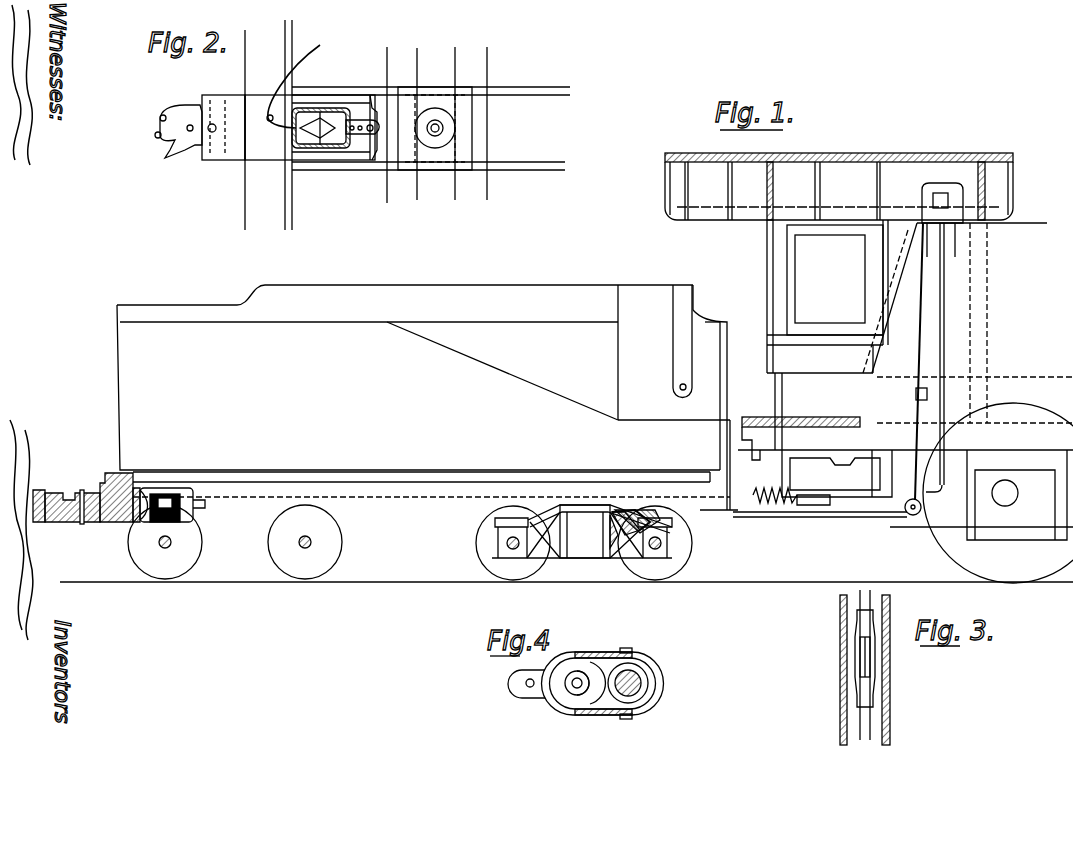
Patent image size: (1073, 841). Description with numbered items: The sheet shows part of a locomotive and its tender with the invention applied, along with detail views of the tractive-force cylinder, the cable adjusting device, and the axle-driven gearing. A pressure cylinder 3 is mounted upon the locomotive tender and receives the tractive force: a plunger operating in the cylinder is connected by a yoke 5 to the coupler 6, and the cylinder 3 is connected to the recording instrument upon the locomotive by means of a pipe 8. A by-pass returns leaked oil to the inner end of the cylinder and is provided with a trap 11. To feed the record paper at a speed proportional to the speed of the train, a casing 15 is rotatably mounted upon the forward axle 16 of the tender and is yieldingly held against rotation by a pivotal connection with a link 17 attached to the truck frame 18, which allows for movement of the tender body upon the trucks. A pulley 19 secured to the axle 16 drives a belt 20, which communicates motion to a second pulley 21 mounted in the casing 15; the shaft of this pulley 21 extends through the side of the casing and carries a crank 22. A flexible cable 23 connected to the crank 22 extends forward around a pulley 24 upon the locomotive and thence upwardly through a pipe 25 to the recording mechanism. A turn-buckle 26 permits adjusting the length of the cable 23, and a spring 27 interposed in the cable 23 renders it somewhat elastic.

In FIG. 2, the pressure cylinder 3 is at (335, 128).
In FIG. 1, the pressure cylinder 3 is at (145, 522).
In FIG. 2, the yoke 5 is at (376, 110).
In FIG. 1, the yoke 5 is at (203, 503).
In FIG. 2, the coupler 6 is at (186, 148).
In FIG. 1, the coupler 6 is at (36, 490).
In FIG. 2, the pipe 8 is at (301, 76).
In FIG. 1, the pipe 8 is at (428, 497).
In FIG. 2, the trap 11 is at (312, 150).
In FIG. 1, the casing 15 is at (615, 558).
In FIG. 4, the casing 15 is at (597, 656).
In FIG. 1, the forward axle 16 is at (665, 537).
In FIG. 4, the forward axle 16 is at (652, 683).
In FIG. 1, the link 17 is at (612, 522).
In FIG. 1, the truck frame 18 is at (612, 543).
In FIG. 4, the pulley 19 is at (628, 650).
In FIG. 4, the belt 20 is at (602, 712).
In FIG. 4, the second pulley 21 is at (580, 706).
In FIG. 1, the crank 22 is at (635, 510).
In FIG. 4, the crank 22 is at (552, 695).
In FIG. 1, the cable 23 is at (748, 515).
In FIG. 1, the pulley 24 is at (913, 516).
In FIG. 1, the pipe 25 is at (924, 350).
In FIG. 3, the pipe 25 is at (890, 695).
In FIG. 1, the turn-buckle 26 is at (942, 411).
In FIG. 3, the turn-buckle 26 is at (873, 663).
In FIG. 1, the spring 27 is at (782, 512).